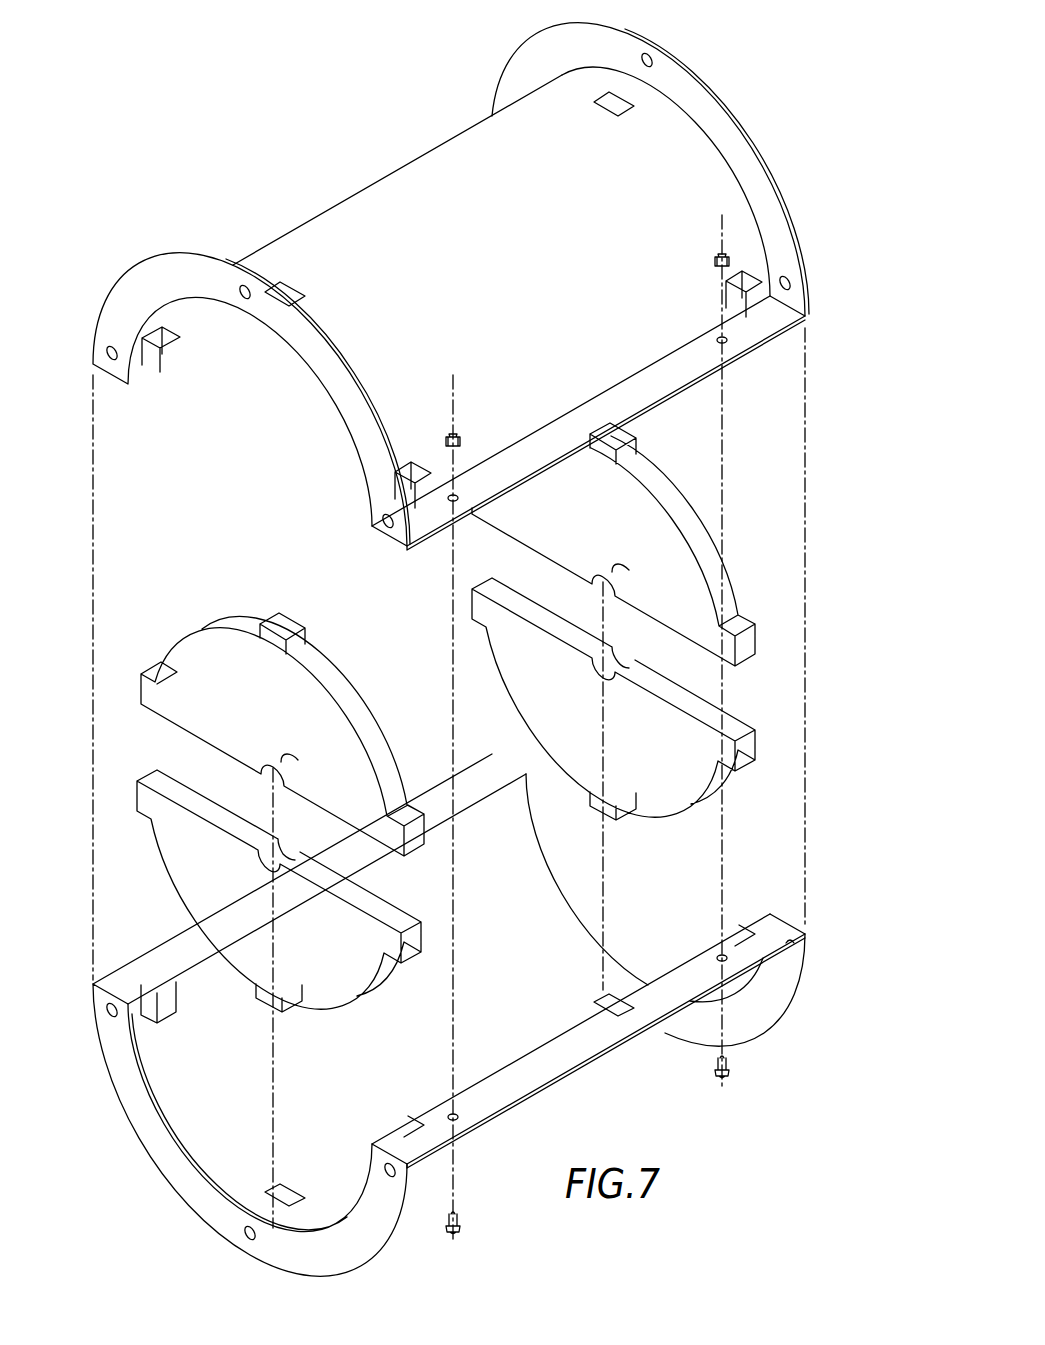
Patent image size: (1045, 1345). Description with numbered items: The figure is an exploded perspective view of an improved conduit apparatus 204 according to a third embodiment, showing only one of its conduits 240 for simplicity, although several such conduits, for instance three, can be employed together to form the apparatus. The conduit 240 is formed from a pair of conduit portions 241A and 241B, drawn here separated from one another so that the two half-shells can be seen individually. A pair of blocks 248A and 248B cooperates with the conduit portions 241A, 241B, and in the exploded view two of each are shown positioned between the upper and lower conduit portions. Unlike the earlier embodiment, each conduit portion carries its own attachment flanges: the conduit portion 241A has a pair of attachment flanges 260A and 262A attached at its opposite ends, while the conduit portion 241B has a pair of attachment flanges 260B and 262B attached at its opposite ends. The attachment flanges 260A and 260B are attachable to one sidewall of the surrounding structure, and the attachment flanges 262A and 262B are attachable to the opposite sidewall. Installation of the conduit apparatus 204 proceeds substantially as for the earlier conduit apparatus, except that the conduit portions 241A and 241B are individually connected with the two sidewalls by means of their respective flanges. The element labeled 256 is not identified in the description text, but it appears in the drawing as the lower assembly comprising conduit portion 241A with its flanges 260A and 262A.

The conduit apparatus 204 is at (722, 74).
The conduit 240 is at (327, 199).
The conduit portion 241B is at (456, 152).
The attachment flange 262B is at (750, 136).
The attachment flange 260B is at (118, 275).
The block 248B is at (648, 446).
The block 248A is at (646, 828).
The lower housing half 256 is at (137, 1141).
The attachment flange 260A is at (152, 1165).
The attachment flange 262A is at (780, 1018).
The conduit portion 241A is at (597, 933).